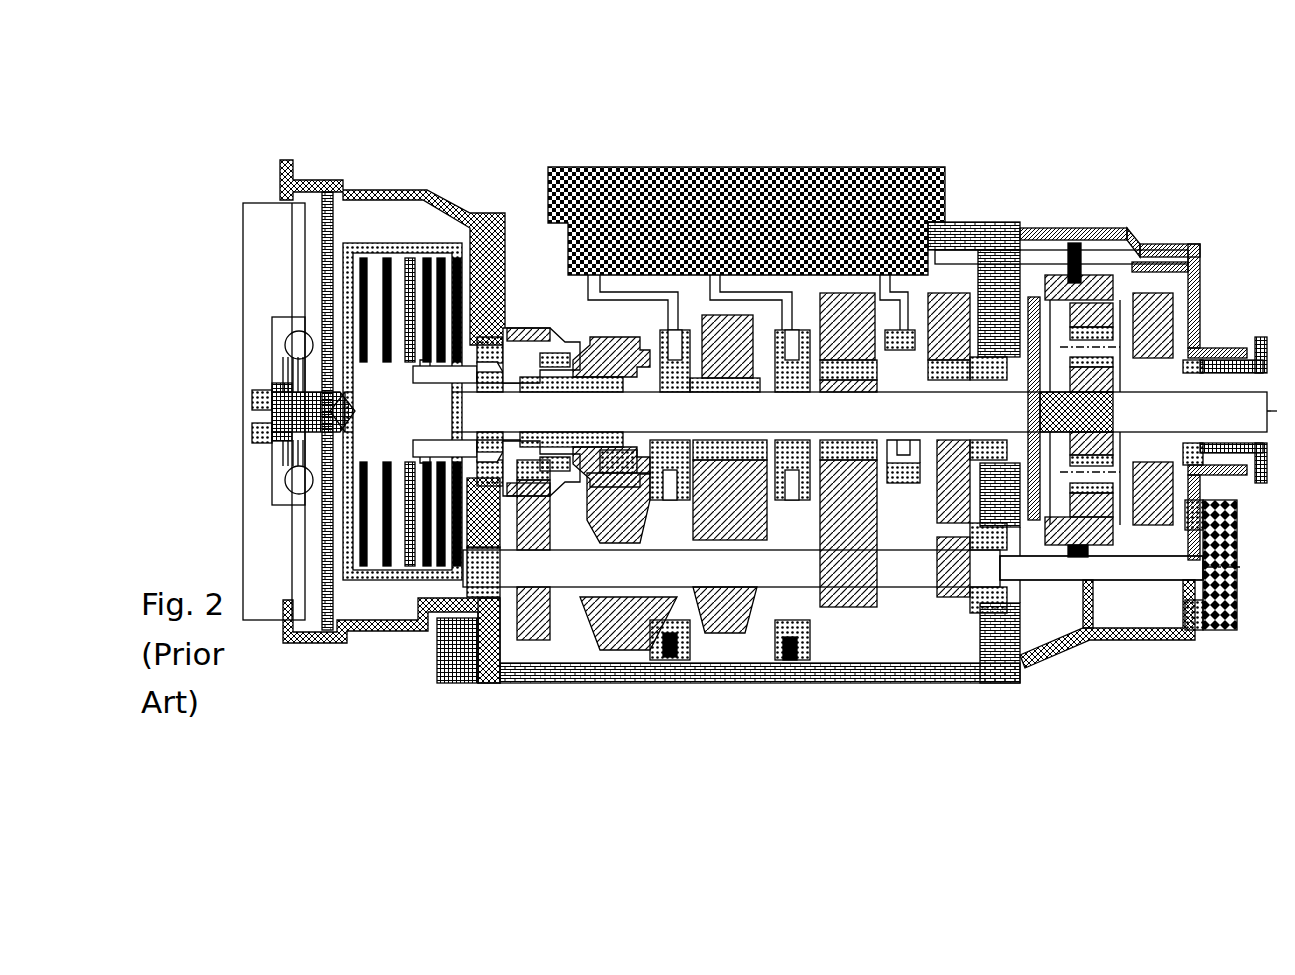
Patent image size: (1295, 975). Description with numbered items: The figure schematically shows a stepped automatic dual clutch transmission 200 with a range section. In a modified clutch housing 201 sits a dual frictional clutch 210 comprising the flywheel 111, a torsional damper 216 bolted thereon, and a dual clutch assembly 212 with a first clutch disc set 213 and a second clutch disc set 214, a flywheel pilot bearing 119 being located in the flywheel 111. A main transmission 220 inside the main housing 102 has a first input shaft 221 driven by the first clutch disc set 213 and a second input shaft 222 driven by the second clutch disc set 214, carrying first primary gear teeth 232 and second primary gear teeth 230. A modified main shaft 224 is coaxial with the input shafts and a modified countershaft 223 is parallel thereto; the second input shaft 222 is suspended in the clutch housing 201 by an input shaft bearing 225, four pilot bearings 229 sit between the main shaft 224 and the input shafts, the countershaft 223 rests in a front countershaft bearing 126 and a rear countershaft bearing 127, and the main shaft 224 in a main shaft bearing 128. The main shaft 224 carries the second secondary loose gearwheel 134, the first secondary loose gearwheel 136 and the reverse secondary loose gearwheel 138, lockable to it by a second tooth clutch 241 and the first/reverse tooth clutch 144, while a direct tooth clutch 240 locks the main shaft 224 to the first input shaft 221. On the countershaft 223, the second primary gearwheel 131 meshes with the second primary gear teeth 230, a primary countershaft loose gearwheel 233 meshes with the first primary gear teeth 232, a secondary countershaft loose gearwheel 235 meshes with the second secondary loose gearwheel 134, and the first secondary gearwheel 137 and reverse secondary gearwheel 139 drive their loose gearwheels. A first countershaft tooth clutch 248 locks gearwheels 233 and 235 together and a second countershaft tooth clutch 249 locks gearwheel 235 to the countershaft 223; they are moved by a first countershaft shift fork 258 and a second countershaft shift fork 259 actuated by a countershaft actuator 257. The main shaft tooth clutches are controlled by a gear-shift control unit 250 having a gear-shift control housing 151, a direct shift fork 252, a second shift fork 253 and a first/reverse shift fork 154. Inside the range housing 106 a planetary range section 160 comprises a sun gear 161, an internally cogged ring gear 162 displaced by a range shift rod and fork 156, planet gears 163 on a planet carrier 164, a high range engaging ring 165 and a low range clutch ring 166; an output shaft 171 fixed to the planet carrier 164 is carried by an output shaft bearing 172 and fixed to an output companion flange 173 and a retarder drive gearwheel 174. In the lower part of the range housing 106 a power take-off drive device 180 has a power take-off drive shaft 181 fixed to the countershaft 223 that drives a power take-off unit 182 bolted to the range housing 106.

The electric motor pump assembly 200 is at (362, 86).
The modified clutch housing 201 is at (487, 215).
The dual frictional clutch 210 is at (200, 241).
The flywheel 111 is at (262, 212).
The dual clutch assembly 212 is at (403, 240).
The second clutch disc set 214 is at (420, 362).
The first clutch disc set 213 is at (373, 368).
The torsional damper 216 is at (296, 348).
The flywheel pilot bearing 119 is at (250, 401).
The gear-shift control unit 250 is at (711, 92).
The gear-shift control housing 151 is at (683, 167).
The direct shift fork 252 is at (640, 292).
The second shift fork 253 is at (763, 290).
The first/reverse shift fork 154 is at (888, 290).
The range shift rod and fork 156 is at (967, 250).
The main housing 102 is at (983, 217).
The range housing 106 is at (1037, 226).
The planetary range section 160 is at (1100, 106).
The sun gear 161 is at (1105, 398).
The internally cogged ring gear 162 is at (1090, 303).
The planet gears 163 is at (1108, 330).
The planet carrier 164 is at (1125, 460).
The high range engaging ring 165 is at (1034, 291).
The low range clutch ring 166 is at (1062, 268).
The retarder drive gearwheel 174 is at (1187, 393).
The output shaft 171 is at (1197, 437).
The output shaft bearing 172 is at (1228, 455).
The output companion flange 173 is at (1260, 333).
The power take-off drive device 180 is at (1226, 749).
The power take-off drive shaft 181 is at (1143, 582).
The power take-off unit 182 is at (1216, 634).
The main transmission 220 is at (212, 705).
The first input shaft 221 is at (433, 424).
The second input shaft 222 is at (462, 457).
The input shaft bearing 225 is at (468, 602).
The second primary gear teeth 230 is at (493, 600).
The front countershaft bearing 126 is at (436, 617).
The second primary gearwheel 131 is at (486, 674).
The countershaft actuator 257 is at (437, 662).
The pilot bearings 229 is at (503, 397).
The modified main shaft 224 is at (556, 410).
The primary countershaft loose gearwheel 233 is at (623, 658).
The first countershaft tooth clutch 248 is at (660, 646).
The first primary gear teeth 232 is at (688, 494).
The direct tooth clutch 240 is at (723, 494).
The secondary countershaft loose gearwheel 235 is at (748, 636).
The second secondary loose gearwheel 134 is at (792, 494).
The second countershaft tooth clutch 249 is at (780, 649).
The second tooth clutch 241 is at (845, 502).
The first secondary gearwheel 137 is at (879, 614).
The first secondary loose gearwheel 136 is at (913, 492).
The first/reverse tooth clutch 144 is at (948, 512).
The reverse secondary gearwheel 139 is at (951, 605).
The reverse secondary loose gearwheel 138 is at (1001, 479).
The rear countershaft bearing 127 is at (994, 615).
The main shaft bearing 128 is at (1012, 652).
The modified countershaft 223 is at (1024, 547).
The second countershaft shift fork 259 is at (690, 656).
The first countershaft shift fork 258 is at (810, 650).